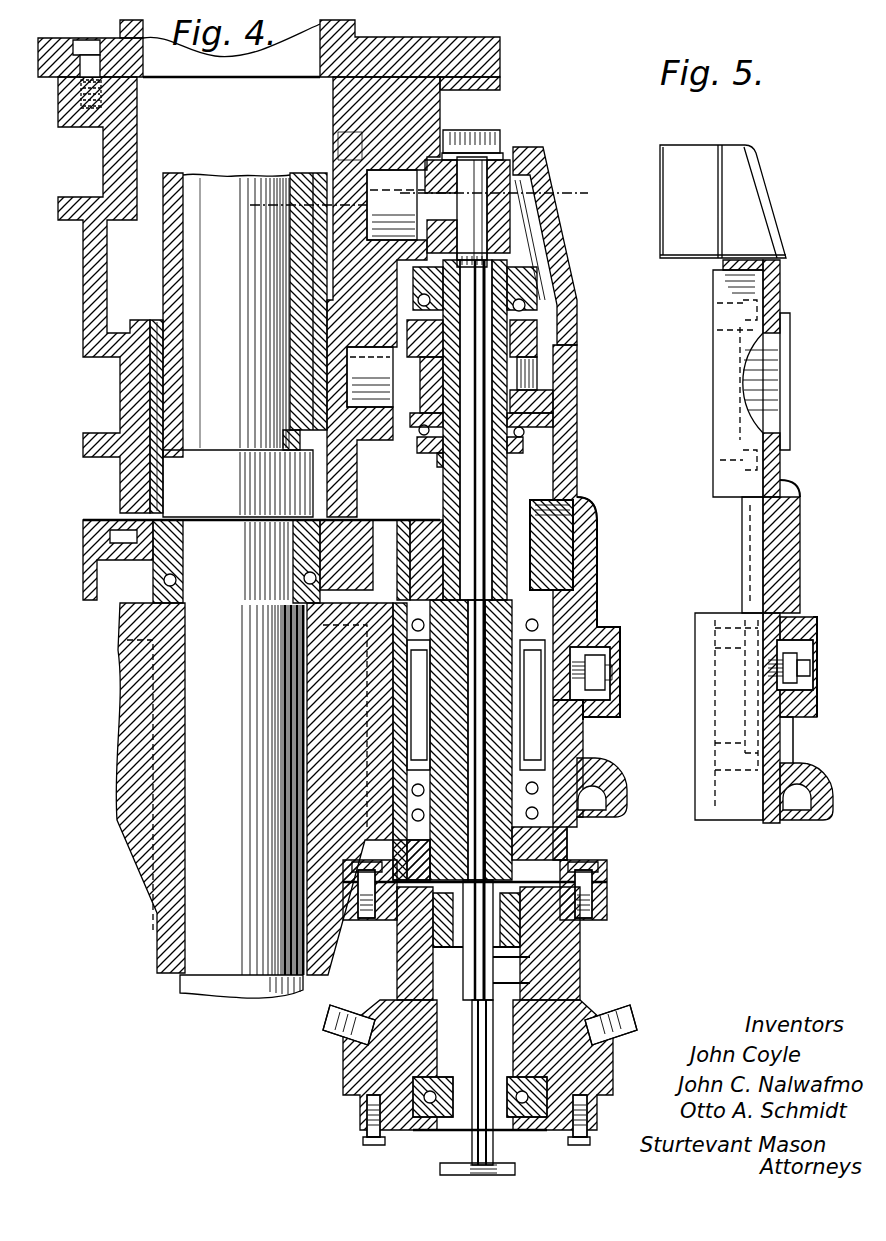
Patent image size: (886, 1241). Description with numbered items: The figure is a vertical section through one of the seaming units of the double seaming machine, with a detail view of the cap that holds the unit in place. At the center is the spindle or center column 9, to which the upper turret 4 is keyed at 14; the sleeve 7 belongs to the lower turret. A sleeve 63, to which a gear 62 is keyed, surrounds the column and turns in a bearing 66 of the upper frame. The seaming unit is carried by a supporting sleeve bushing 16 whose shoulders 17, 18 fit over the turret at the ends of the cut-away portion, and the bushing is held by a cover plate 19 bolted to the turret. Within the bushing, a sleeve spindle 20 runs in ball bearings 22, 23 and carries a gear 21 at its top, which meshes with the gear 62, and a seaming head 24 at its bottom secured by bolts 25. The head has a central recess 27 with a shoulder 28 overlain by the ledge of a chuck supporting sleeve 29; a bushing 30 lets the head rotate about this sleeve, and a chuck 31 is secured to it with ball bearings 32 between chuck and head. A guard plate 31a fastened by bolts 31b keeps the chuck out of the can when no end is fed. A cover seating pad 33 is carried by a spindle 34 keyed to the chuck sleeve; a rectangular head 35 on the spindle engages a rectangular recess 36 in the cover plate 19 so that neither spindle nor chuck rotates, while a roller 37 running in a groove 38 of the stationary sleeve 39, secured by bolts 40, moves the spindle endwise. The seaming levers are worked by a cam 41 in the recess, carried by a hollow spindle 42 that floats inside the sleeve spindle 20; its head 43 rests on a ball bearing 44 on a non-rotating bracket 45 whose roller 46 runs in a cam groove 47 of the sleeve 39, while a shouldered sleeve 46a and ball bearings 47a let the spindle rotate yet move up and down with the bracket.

In FIG. 4, the upper turret 4 is at (140, 806).
In FIG. 4, the sleeve 7 is at (417, 578).
In FIG. 4, the spindle or center column 9 is at (243, 574).
In FIG. 4, the key 14 is at (300, 706).
In FIG. 4, the supporting sleeve bushing 16 is at (578, 746).
In FIG. 4, the shoulder 17 is at (300, 640).
In FIG. 4, the shoulder 18 is at (365, 845).
In FIG. 4, the cover plate 19 is at (580, 525).
In FIG. 5, the cover plate 19 is at (800, 497).
In FIG. 4, the sleeve spindle 20 is at (598, 616).
In FIG. 4, the gear 21 is at (590, 496).
In FIG. 4, the ball bearing 22 is at (597, 585).
In FIG. 4, the ball bearing 23 is at (578, 792).
In FIG. 4, the seaming head 24 is at (540, 966).
In FIG. 4, the bolts 25 is at (540, 852).
In FIG. 4, the central recess 27 is at (555, 960).
In FIG. 4, the shoulder 28 is at (600, 1050).
In FIG. 4, the chuck supporting sleeve 29 is at (610, 1082).
In FIG. 4, the bushing 30 is at (355, 1058).
In FIG. 4, the chuck 31 is at (580, 1140).
In FIG. 4, the guard plate 31a is at (385, 1140).
In FIG. 4, the bolts 31b is at (372, 1122).
In FIG. 4, the ball bearings 32 is at (420, 1110).
In FIG. 4, the cover seating pad 33 is at (440, 1170).
In FIG. 4, the spindle 34 is at (495, 992).
In FIG. 4, the head 35 is at (525, 165).
In FIG. 4, the rectangular recess 36 is at (512, 150).
In FIG. 4, the roller 37 is at (387, 200).
In FIG. 4, the groove 38 is at (115, 122).
In FIG. 4, the sleeve 39 is at (340, 148).
In FIG. 4, the bolts 40 is at (90, 50).
In FIG. 4, the cam 41 is at (612, 890).
In FIG. 4, the hollow spindle 42 is at (562, 832).
In FIG. 4, the head 43 is at (530, 310).
In FIG. 4, the ball bearing 44 is at (530, 336).
In FIG. 4, the bracket 45 is at (545, 346).
In FIG. 4, the roller 46 is at (373, 373).
In FIG. 4, the shouldered sleeve 46a is at (530, 448).
In FIG. 4, the cam groove 47 is at (300, 413).
In FIG. 4, the ball bearings 47a is at (556, 400).
In FIG. 4, the gear 62 is at (380, 520).
In FIG. 4, the sleeve 63 is at (300, 348).
In FIG. 4, the bearing 66 is at (157, 404).